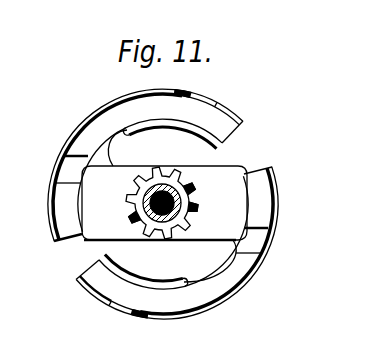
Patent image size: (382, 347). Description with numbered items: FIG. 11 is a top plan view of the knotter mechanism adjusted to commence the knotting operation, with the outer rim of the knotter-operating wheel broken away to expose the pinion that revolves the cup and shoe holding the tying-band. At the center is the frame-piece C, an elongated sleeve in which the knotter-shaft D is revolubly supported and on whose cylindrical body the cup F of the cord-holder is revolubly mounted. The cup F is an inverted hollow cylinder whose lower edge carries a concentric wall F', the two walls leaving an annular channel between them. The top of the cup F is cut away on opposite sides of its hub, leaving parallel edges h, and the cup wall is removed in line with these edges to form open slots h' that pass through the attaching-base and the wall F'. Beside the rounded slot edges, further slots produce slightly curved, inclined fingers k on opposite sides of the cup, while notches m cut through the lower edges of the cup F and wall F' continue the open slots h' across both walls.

The concentric wall F' is at (145, 165).
The cup F is at (177, 243).
The notches m is at (63, 180).
The fingers k is at (145, 124).
The parallel edges h is at (172, 206).
The open slots h' is at (75, 255).
The knotter-shaft D is at (170, 199).
The frame-piece C is at (142, 200).